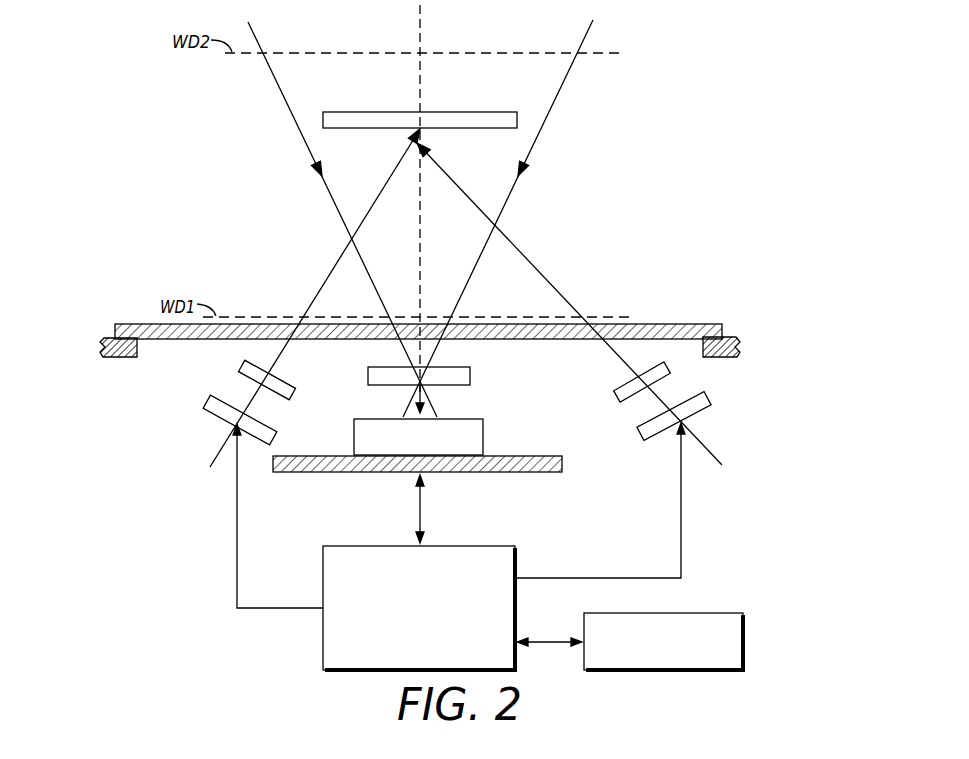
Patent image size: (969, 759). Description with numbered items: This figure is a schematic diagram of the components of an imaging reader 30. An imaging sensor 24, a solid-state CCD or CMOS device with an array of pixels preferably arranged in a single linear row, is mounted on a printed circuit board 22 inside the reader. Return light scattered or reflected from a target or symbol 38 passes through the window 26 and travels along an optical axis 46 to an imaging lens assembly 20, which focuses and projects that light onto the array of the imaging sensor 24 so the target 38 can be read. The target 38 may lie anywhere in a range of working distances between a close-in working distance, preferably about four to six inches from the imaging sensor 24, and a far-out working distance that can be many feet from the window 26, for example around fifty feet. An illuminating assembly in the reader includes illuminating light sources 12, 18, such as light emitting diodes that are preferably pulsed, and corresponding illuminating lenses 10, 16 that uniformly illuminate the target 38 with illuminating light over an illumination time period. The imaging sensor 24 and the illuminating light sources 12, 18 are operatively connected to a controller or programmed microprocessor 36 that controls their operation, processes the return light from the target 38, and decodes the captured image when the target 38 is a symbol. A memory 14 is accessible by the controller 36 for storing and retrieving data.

The illuminating lens 10 is at (815, 365).
The illuminating light source 12 is at (697, 415).
The memory 14 is at (745, 643).
The illuminating lens 16 is at (57, 386).
The illuminating light source 18 is at (223, 418).
The imaging lens assembly 20 is at (368, 378).
The printed circuit board 22 is at (512, 472).
The imaging sensor 24 is at (354, 437).
The window 26 is at (128, 325).
The imaging reader 30 is at (606, 158).
The controller 36 is at (323, 574).
The target 38 is at (481, 112).
The optical axis 46 is at (421, 26).